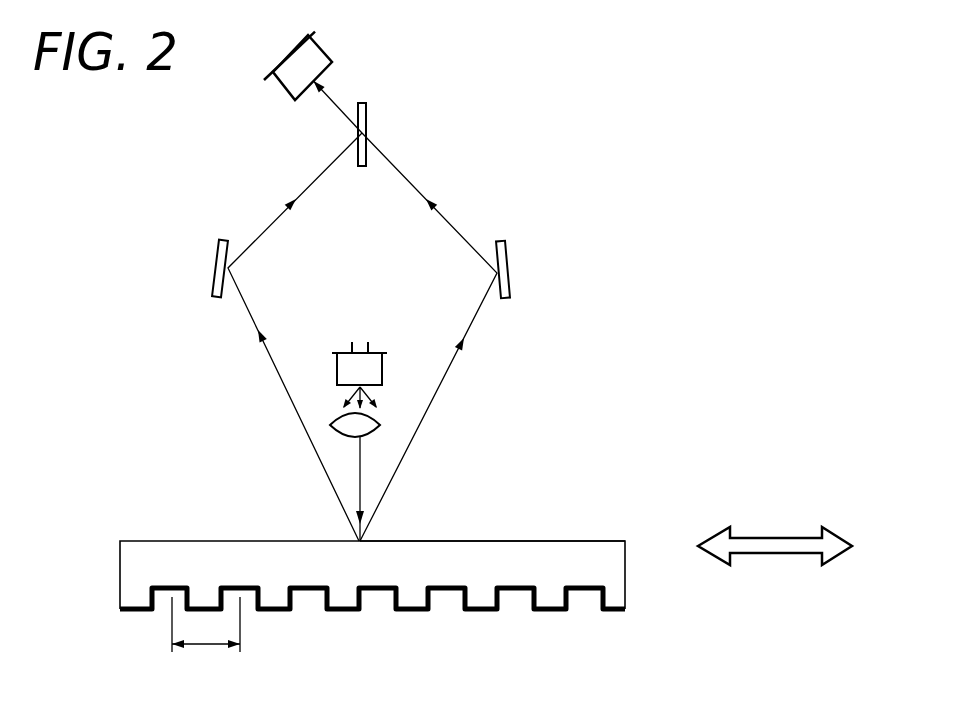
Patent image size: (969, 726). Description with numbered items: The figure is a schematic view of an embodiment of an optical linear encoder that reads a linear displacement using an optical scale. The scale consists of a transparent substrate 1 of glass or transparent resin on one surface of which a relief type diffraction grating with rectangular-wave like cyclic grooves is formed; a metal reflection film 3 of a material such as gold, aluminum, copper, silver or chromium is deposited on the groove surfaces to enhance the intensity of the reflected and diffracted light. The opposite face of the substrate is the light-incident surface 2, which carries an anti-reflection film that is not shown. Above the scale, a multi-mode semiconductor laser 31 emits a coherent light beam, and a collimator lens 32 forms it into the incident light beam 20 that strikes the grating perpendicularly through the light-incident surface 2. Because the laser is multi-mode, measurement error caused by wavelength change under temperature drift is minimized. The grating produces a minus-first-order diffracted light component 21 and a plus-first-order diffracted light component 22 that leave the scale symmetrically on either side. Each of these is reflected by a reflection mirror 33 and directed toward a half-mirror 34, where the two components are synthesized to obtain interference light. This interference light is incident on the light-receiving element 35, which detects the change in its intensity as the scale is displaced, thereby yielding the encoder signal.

The transparent substrate 1 is at (130, 563).
The light-incident surface 2 is at (578, 543).
The reflection film 3 is at (130, 610).
The incident light beam 20 is at (360, 472).
The −1st-order diffracted light component 21 is at (297, 415).
The +1st-order diffracted light component 22 is at (440, 392).
The multi-mode semiconductor laser 31 is at (372, 373).
The collimator lens 32 is at (372, 420).
The reflection mirror 33 is at (217, 278).
The half-mirror 34 is at (367, 110).
The light-receiving element 35 is at (322, 48).